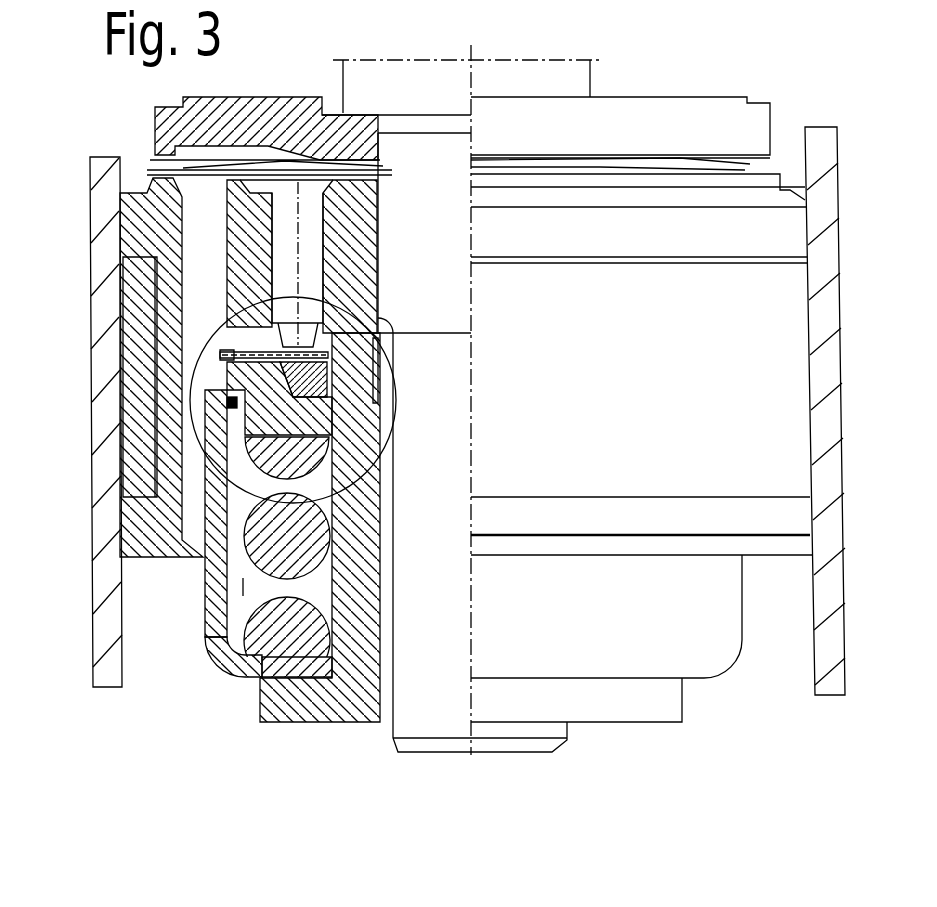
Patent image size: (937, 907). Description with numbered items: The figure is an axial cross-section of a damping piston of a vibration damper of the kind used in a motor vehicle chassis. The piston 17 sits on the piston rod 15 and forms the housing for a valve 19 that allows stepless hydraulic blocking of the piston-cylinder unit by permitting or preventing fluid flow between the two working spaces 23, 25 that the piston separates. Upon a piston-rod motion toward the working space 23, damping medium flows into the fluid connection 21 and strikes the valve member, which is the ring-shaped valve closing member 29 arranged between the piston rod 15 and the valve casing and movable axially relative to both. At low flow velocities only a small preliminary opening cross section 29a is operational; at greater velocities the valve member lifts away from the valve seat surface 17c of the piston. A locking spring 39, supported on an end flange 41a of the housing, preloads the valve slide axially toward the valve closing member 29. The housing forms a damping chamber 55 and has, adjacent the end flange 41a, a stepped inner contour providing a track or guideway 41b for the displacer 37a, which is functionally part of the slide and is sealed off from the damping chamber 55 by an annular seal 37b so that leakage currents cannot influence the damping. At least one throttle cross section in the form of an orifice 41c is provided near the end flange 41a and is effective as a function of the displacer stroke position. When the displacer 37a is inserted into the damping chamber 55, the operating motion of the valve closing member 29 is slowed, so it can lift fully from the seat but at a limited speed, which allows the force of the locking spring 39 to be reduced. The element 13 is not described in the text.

The flange plate 13 is at (100, 568).
The piston rod 15 is at (420, 720).
The piston 17 is at (145, 580).
The valve seat surface 17c is at (222, 343).
The valve 19 is at (235, 328).
The fluid connection 21 is at (282, 211).
The working space 23 is at (298, 86).
The working space 25 is at (258, 806).
The valve closing member 29 is at (226, 362).
The preliminary opening cross section 29a is at (221, 354).
The displacer 37a is at (250, 382).
The annular seal 37b is at (230, 403).
The locking spring 39 is at (345, 677).
The end flange 41a is at (291, 667).
The track or guideway 41b is at (212, 482).
The orifice 41c is at (250, 662).
The damping chamber 55 is at (253, 585).